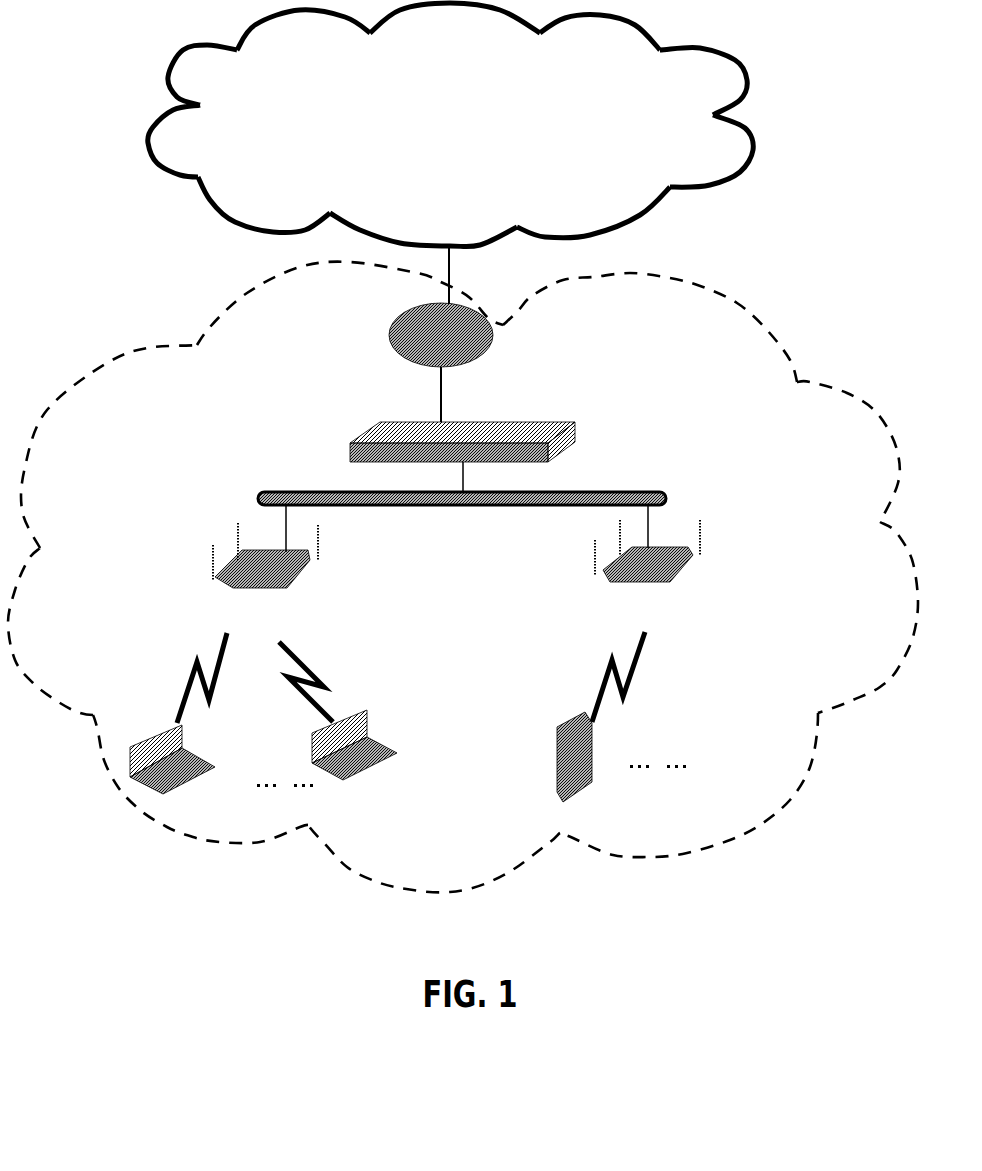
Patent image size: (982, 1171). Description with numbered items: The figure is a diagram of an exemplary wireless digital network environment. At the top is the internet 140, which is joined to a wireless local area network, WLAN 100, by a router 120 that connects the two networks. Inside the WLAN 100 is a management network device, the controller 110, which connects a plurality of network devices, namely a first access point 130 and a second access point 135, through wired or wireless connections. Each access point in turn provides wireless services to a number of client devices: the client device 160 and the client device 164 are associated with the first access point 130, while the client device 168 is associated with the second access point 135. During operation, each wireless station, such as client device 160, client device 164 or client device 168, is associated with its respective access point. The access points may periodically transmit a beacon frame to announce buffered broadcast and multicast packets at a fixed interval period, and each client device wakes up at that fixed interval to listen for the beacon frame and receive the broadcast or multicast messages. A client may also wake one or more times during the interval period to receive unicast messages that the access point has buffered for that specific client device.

The WLAN 100 is at (147, 328).
The controller 110 is at (278, 465).
The router 120 is at (368, 358).
The access point AP 1 130 is at (272, 633).
The access point AP 2 135 is at (671, 633).
The internet 140 is at (432, 151).
The client device 160 is at (200, 798).
The client device 164 is at (401, 796).
The client device 168 is at (626, 803).